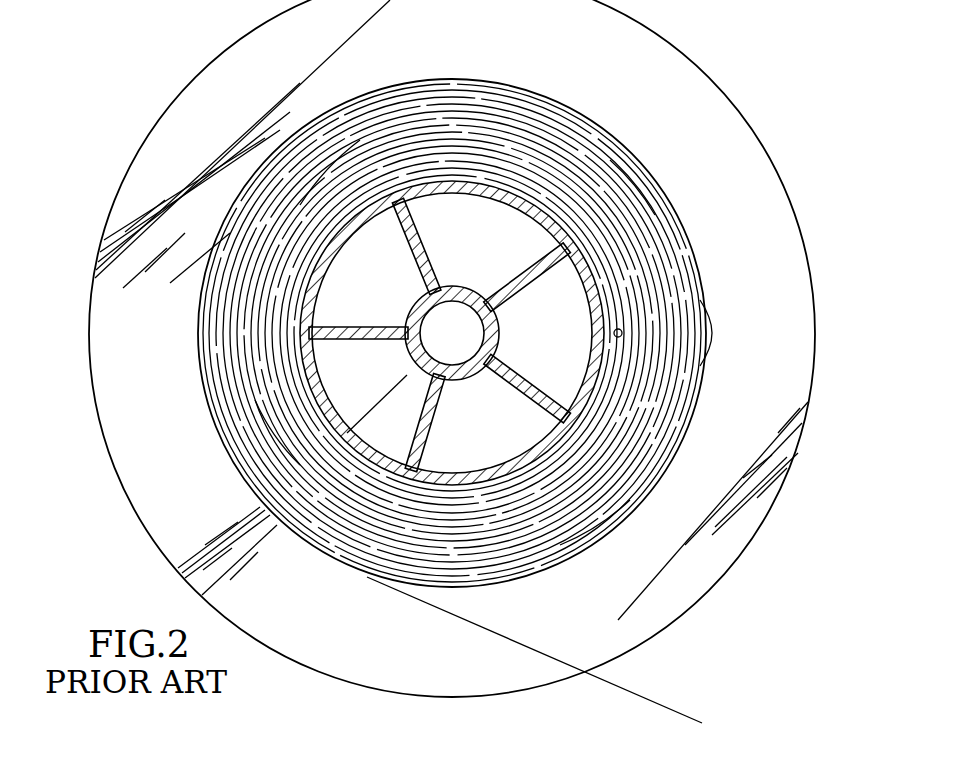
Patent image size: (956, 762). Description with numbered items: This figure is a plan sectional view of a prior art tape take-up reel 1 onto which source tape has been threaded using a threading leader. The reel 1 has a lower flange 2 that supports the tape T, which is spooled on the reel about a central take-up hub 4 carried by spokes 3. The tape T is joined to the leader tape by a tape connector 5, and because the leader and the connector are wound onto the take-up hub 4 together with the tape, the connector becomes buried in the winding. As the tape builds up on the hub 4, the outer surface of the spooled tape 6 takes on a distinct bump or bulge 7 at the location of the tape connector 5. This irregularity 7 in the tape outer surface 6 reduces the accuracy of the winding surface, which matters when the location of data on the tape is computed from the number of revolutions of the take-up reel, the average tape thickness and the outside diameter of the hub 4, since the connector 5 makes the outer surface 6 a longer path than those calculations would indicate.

The take-up reel 1 is at (165, 28).
The lower flange 2 is at (613, 82).
The spoke 3 is at (440, 229).
The take-up hub 4 is at (493, 475).
The tape connector 5 is at (613, 335).
The outer surface of the spooled tape 6 is at (195, 350).
The bump or bulge 7 is at (718, 333).
The tape T is at (675, 708).